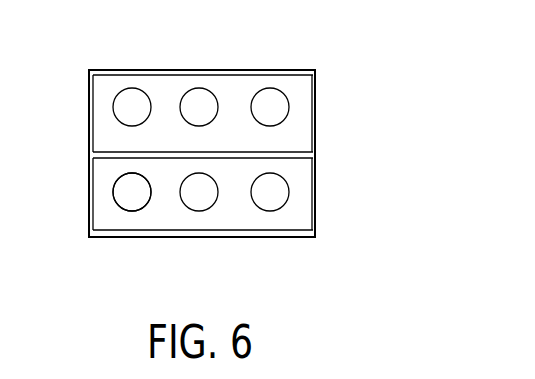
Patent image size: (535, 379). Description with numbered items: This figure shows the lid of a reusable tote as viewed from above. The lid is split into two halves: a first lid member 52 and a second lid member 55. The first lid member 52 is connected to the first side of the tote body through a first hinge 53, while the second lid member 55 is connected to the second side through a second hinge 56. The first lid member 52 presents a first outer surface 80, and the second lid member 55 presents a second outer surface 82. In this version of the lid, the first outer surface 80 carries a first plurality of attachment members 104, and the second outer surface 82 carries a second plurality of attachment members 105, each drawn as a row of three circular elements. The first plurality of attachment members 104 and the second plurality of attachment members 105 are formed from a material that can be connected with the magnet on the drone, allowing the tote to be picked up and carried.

The first hinge 53 is at (89, 71).
The second hinge 56 is at (89, 237).
The first outer surface 80 is at (291, 82).
The second outer surface 82 is at (136, 220).
The first lid member 52 is at (288, 135).
The second lid member 55 is at (287, 221).
The first plurality of attachment members 104 is at (117, 140).
The second plurality of attachment members 105 is at (117, 176).